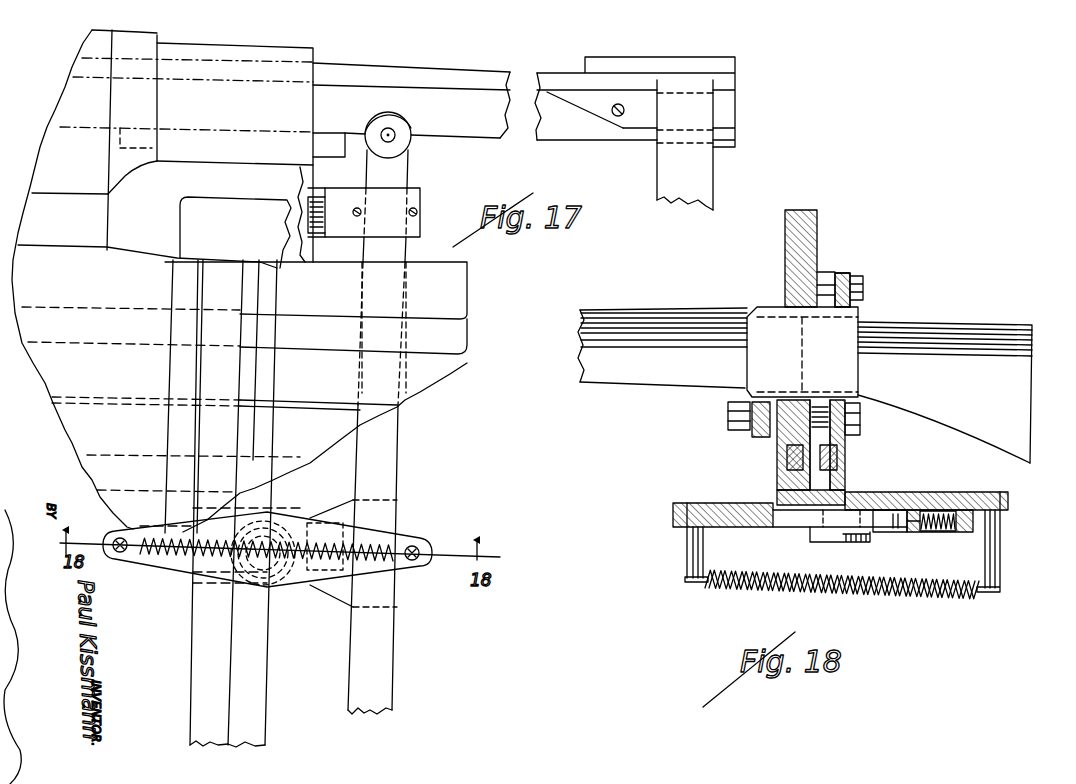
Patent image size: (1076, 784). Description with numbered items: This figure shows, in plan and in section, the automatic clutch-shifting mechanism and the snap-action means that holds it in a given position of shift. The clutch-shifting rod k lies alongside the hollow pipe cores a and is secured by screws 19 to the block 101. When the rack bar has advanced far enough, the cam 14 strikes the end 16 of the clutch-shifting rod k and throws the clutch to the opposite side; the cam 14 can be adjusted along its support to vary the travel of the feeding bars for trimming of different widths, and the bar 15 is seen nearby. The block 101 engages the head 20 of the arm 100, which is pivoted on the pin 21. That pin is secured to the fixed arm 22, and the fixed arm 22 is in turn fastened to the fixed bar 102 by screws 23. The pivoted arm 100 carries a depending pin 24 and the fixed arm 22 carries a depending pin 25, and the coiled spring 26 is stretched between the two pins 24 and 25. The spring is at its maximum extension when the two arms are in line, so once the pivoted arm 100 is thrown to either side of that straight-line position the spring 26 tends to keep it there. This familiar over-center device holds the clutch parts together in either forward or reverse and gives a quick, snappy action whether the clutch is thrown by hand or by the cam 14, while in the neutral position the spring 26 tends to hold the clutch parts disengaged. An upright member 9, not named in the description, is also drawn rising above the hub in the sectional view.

In FIG. 18, the stem 9 is at (808, 235).
In FIG. 17, the cam 14 is at (610, 118).
In FIG. 17, the bar 15 is at (460, 92).
In FIG. 17, the end of the clutch-shifting rod 16 is at (400, 146).
In FIG. 18, the screws 19 is at (938, 535).
In FIG. 18, the head of the arm 20 is at (893, 492).
In FIG. 18, the pin 21 is at (862, 514).
In FIG. 18, the fixed arm 22 is at (952, 518).
In FIG. 18, the screws 23 is at (777, 460).
In FIG. 18, the depending pin 24 is at (687, 550).
In FIG. 18, the depending pin 25 is at (1000, 543).
In FIG. 17, the coiled spring 26 is at (400, 530).
In FIG. 18, the coiled spring 26 is at (740, 572).
In FIG. 17, the arm 100 is at (148, 562).
In FIG. 18, the arm 100 is at (723, 503).
In FIG. 17, the block 101 is at (337, 593).
In FIG. 18, the block 101 is at (918, 535).
In FIG. 18, the fixed bar 102 is at (777, 445).
In FIG. 17, the clutch-shifting rod k is at (395, 452).
In FIG. 18, the hollow pipe cores a is at (620, 378).